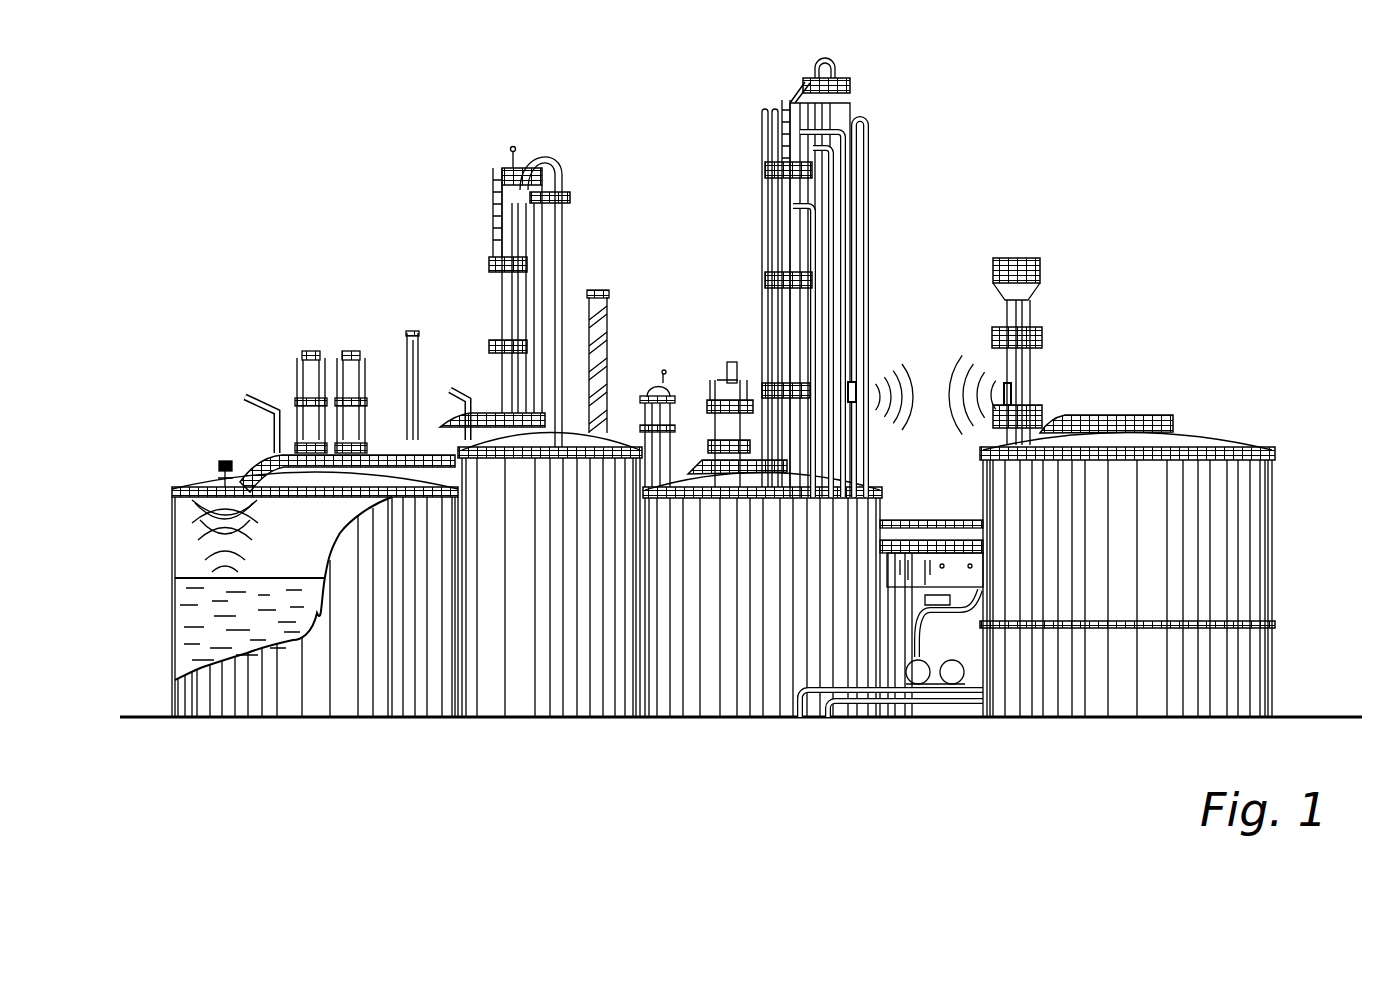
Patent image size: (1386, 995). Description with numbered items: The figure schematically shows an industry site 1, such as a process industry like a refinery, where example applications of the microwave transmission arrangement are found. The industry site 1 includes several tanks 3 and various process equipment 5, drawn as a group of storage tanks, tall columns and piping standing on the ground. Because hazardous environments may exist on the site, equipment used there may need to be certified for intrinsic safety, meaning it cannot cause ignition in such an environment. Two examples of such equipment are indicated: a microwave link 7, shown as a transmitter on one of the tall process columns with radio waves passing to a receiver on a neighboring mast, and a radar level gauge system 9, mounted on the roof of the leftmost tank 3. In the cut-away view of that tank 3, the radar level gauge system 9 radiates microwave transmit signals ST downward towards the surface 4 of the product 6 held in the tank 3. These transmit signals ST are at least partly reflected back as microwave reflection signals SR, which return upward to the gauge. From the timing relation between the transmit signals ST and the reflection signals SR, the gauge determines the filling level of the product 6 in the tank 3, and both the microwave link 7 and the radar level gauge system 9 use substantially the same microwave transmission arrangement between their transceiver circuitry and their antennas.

The industry site 1 is at (1215, 180).
The tank 3 is at (353, 659).
The surface 4 is at (178, 578).
The process equipment 5 is at (688, 292).
The product 6 is at (232, 651).
The microwave link 7 is at (884, 348).
The radar level gauge system 9 is at (238, 430).
The microwave transmit signals ST is at (188, 530).
The microwave reflection signals SR is at (266, 552).